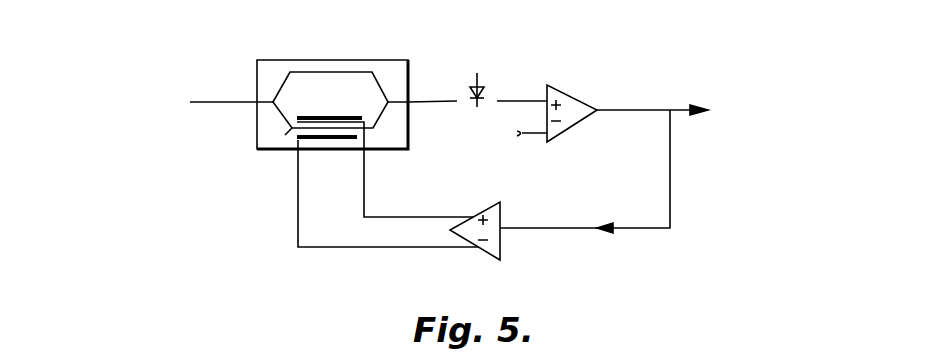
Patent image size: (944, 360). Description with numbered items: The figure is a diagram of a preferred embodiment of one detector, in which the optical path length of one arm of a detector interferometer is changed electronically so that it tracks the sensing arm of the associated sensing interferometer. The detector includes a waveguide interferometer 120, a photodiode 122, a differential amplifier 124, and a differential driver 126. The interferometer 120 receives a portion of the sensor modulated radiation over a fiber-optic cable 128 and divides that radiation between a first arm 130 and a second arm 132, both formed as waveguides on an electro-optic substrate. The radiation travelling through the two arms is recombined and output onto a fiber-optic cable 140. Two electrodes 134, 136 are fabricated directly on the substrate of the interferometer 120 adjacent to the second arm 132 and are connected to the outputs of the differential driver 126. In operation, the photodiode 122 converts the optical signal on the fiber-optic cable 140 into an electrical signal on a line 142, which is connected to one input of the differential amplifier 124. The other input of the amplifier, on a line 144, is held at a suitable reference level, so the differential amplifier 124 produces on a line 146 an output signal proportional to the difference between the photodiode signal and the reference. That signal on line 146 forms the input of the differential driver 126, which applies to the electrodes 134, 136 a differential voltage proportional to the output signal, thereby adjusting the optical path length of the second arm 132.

The waveguide interferometer 120 is at (287, 59).
The first arm (waveguide) 130 is at (322, 72).
The fiber-optic cable 128 is at (217, 101).
The fiber-optic cable 140 is at (418, 101).
The photodiode 122 is at (472, 80).
The line 142 is at (522, 100).
The differential amplifier 124 is at (577, 97).
The line 144 is at (532, 135).
The line 146 is at (635, 110).
The electrode 134 is at (340, 117).
The electrode 136 is at (338, 143).
The second arm (waveguide) 132 is at (292, 131).
The differential driver 126 is at (485, 253).